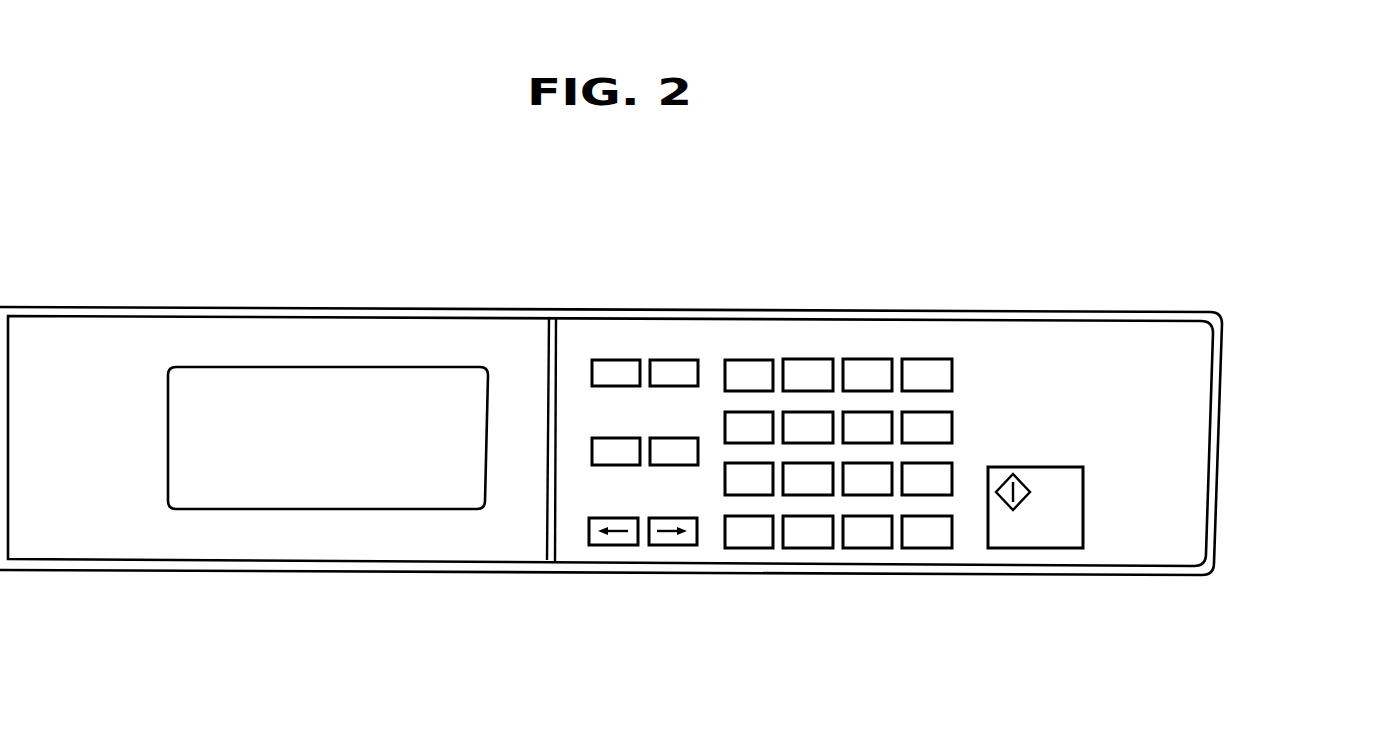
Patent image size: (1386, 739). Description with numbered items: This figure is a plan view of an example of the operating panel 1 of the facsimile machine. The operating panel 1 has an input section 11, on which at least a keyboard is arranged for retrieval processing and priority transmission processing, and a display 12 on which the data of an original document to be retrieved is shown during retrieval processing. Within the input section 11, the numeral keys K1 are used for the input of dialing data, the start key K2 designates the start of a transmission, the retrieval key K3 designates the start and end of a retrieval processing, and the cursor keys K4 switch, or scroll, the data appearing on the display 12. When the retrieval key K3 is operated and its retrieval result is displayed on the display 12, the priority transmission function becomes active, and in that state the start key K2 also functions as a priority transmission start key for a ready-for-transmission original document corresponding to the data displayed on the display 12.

The operating panel 1 is at (867, 677).
The input section 11 is at (990, 305).
The display 12 is at (400, 365).
The numeral keys K1 is at (862, 342).
The start key K2 is at (1050, 537).
The retrieval key K3 is at (618, 360).
The cursor keys K4 is at (672, 546).